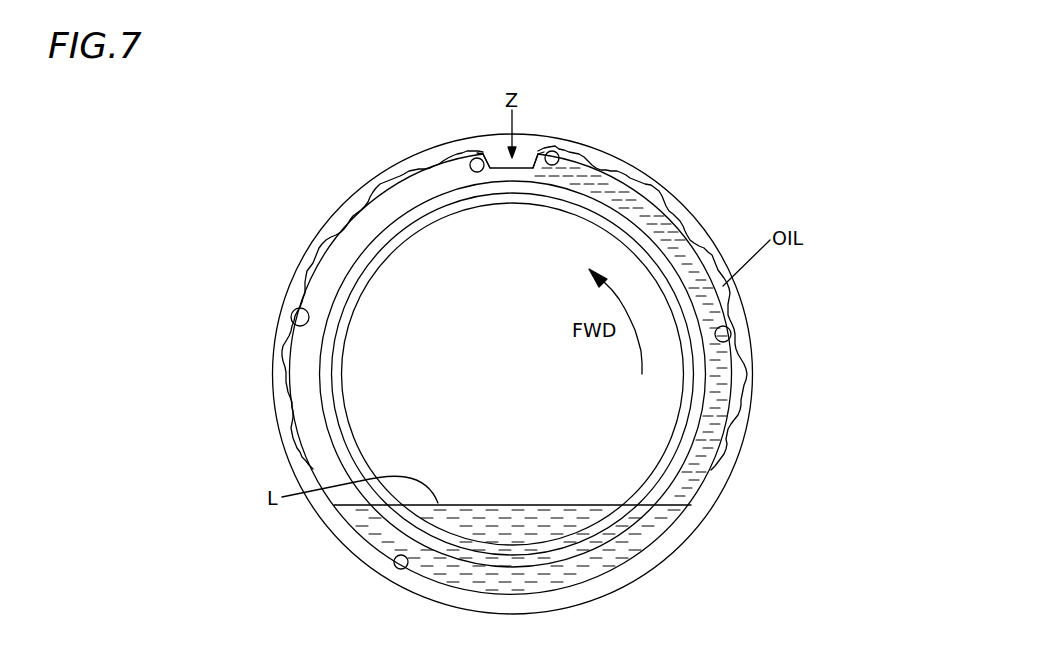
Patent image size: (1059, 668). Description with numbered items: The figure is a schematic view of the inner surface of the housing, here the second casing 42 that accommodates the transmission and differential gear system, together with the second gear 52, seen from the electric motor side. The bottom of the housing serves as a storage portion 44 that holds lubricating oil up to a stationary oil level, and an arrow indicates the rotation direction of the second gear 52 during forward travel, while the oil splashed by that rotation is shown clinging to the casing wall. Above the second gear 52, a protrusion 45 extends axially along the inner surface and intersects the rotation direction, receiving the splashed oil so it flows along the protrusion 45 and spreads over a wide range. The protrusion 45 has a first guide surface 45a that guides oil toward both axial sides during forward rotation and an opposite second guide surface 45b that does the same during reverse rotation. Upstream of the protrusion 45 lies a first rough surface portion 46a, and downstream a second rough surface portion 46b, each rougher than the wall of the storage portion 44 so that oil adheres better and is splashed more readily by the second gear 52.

The second casing 42 is at (675, 190).
The storage portion 44 is at (398, 570).
The protrusion 45 is at (513, 162).
The first guide surface 45a is at (560, 150).
The second guide surface 45b is at (478, 160).
The first rough surface portion 46a is at (731, 331).
The second rough surface portion 46b is at (291, 318).
The second gear 52 is at (375, 235).